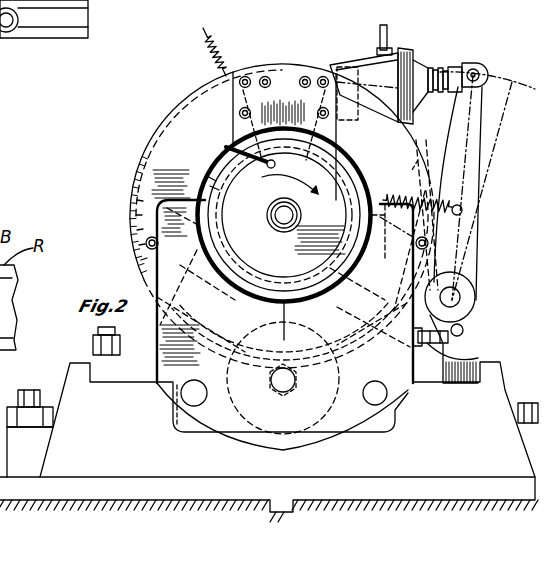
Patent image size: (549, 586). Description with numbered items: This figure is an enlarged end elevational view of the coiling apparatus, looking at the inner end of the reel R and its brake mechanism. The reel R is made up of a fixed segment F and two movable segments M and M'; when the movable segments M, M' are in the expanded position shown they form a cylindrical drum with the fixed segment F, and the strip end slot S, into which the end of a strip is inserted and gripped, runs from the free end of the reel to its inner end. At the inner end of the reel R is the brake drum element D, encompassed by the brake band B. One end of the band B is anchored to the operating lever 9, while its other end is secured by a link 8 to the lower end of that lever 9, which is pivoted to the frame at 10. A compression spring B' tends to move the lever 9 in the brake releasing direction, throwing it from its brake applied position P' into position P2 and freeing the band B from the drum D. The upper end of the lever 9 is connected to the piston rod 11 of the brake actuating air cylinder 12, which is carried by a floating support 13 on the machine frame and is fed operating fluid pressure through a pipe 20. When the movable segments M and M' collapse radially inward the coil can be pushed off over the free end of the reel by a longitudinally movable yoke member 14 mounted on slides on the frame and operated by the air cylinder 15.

The brake drum element D is at (167, 128).
The brake band B is at (124, 206).
The compression spring B' is at (429, 147).
The floating support 13 is at (268, 68).
The brake actuating air cylinder 12 is at (378, 63).
The pipe 20 is at (388, 35).
The piston rod 11 is at (452, 78).
The brake applied position P' is at (492, 49).
The brake released position P2 is at (512, 82).
The fixed segment F is at (342, 150).
The strip end slot S is at (240, 166).
The yoke member 14 is at (167, 228).
The operating lever 9 is at (478, 232).
The pivot 10 is at (452, 297).
The link 8 is at (470, 350).
The movable segment M is at (357, 284).
The movable segment M' is at (207, 284).
The reel R is at (283, 258).
The air cylinder 15 is at (331, 428).